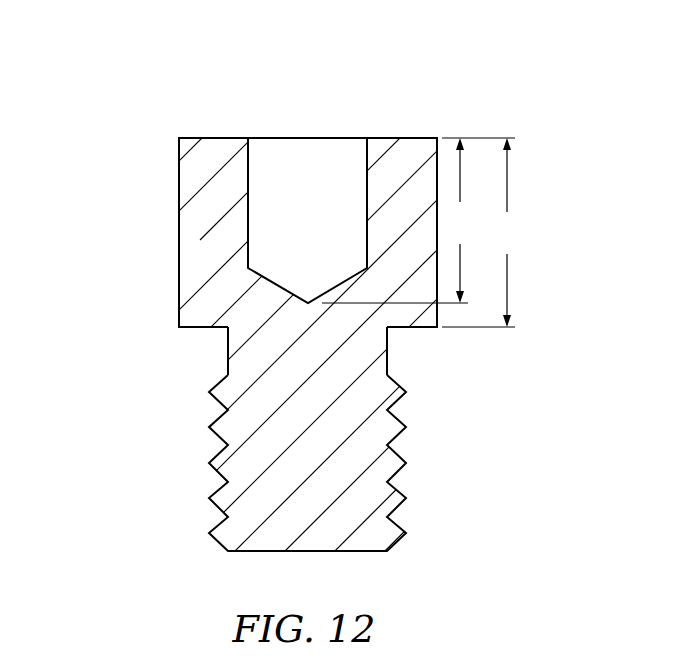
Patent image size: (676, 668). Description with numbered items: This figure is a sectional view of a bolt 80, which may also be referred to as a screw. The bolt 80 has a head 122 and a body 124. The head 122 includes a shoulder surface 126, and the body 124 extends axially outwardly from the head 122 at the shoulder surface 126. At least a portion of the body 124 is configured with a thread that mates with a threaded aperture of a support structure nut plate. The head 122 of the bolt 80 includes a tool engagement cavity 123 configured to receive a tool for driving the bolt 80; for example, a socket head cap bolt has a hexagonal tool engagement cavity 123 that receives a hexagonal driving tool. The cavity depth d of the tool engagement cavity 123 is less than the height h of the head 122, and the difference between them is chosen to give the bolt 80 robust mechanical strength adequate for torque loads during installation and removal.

The bolt 80 is at (480, 93).
The head 122 is at (178, 278).
The tool engagement cavity 123 is at (308, 168).
The body 124 is at (337, 397).
The shoulder surface 126 is at (203, 332).